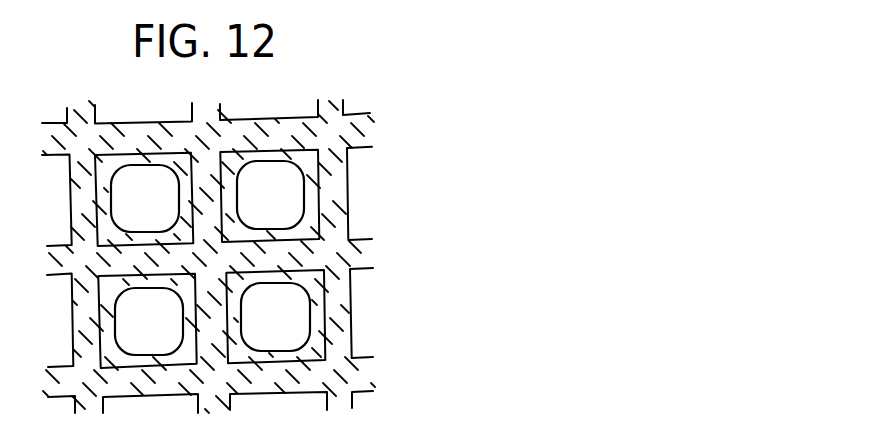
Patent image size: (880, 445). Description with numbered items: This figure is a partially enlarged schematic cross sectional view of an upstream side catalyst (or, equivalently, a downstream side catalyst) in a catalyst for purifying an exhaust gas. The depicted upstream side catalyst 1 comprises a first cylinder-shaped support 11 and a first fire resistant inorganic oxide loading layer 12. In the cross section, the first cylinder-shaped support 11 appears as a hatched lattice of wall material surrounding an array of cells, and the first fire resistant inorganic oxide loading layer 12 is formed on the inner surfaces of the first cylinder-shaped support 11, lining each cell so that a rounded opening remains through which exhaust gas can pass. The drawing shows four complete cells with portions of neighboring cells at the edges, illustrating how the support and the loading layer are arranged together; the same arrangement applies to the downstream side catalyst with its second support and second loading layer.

The upstream side catalyst 1 is at (330, 92).
The first cylinder-shaped support 11 is at (333, 203).
The first fire resistant inorganic oxide loading layer 12 is at (307, 226).